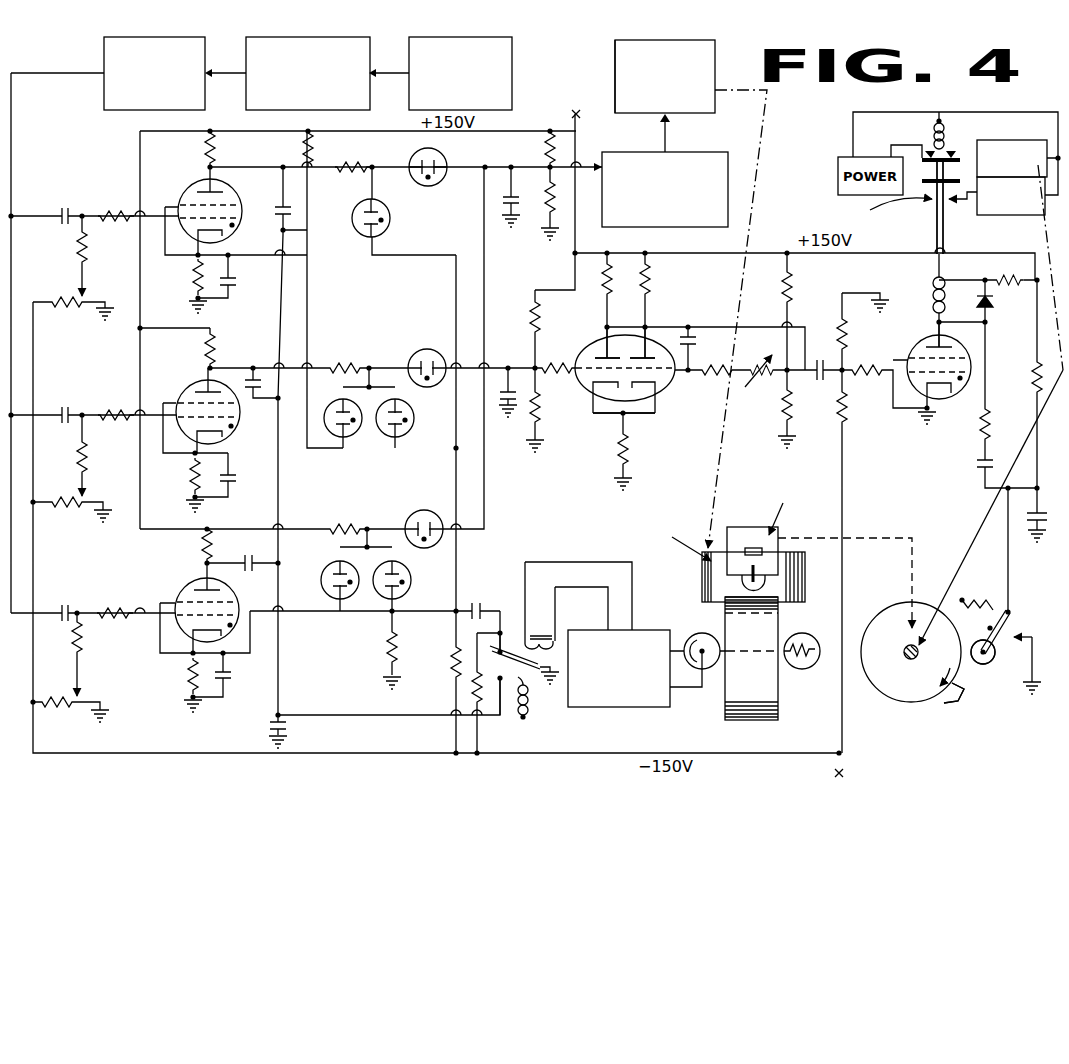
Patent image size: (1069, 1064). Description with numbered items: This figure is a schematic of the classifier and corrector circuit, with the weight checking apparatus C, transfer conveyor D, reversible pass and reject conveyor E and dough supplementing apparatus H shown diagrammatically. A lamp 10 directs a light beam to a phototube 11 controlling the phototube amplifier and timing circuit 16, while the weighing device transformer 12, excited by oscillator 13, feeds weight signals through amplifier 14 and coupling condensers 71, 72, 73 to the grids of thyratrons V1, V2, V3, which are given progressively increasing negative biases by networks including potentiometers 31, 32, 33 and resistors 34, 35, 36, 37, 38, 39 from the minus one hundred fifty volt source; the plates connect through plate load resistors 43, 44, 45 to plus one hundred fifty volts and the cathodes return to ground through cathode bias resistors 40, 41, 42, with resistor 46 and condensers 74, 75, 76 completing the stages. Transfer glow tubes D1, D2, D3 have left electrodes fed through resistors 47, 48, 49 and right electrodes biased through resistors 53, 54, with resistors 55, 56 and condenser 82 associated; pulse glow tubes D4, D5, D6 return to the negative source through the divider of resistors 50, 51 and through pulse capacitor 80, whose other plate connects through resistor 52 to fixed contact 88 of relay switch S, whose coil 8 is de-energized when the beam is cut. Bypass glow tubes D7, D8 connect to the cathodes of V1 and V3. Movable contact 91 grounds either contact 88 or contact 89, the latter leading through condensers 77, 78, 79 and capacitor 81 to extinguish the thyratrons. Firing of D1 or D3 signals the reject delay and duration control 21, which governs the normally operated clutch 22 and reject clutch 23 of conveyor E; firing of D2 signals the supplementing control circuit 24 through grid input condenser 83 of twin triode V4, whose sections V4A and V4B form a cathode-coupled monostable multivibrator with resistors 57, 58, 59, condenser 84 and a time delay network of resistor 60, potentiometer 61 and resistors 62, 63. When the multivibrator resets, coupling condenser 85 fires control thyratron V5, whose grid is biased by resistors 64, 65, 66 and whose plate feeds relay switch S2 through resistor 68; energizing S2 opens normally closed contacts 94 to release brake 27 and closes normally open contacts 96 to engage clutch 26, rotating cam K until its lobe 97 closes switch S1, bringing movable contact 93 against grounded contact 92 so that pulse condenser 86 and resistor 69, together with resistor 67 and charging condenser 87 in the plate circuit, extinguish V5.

The relay 8 is at (520, 696).
The lamp 10 is at (822, 660).
The phototube 11 is at (693, 636).
The weighing device transformer 12 is at (321, 37).
The oscillator 13 is at (473, 37).
The amplifier 14 is at (104, 45).
The phototube amplifier and timing circuit 16 is at (598, 708).
The reject delay and duration control 21 is at (688, 152).
The normally operated clutch 22 is at (615, 60).
The reject clutch 23 is at (615, 83).
The dough discharge control circuit 24 is at (605, 418).
The clutch 26 is at (1005, 215).
The brake 27 is at (1004, 140).
The potentiometer 31 is at (73, 306).
The potentiometer 32 is at (68, 512).
The potentiometer 33 is at (66, 705).
The resistor 34 is at (80, 249).
The resistor 35 is at (80, 450).
The resistor 36 is at (80, 656).
The resistor 37 is at (121, 192).
The resistor 38 is at (108, 422).
The resistor 39 is at (111, 618).
The cathode bias resistor 40 is at (196, 275).
The cathode bias resistor 41 is at (195, 471).
The cathode bias resistor 42 is at (188, 681).
The plate load resistor 43 is at (217, 151).
The plate load resistor 44 is at (221, 353).
The plate load resistor 45 is at (212, 549).
The resistor 46 is at (313, 158).
The resistor 47 is at (360, 164).
The resistor 48 is at (341, 363).
The resistor 49 is at (343, 522).
The resistor 50 is at (385, 640).
The resistor 51 is at (449, 655).
The resistor 52 is at (477, 697).
The resistor 53 is at (545, 150).
The resistor 54 is at (533, 327).
The resistor 55 is at (547, 218).
The resistor 56 is at (537, 407).
The resistor 57 is at (627, 274).
The resistor 58 is at (649, 275).
The resistor 59 is at (632, 453).
The resistor 60 is at (714, 386).
The potentiometer 61 is at (760, 382).
The resistor 62 is at (787, 407).
The resistor 63 is at (793, 283).
The resistor 64 is at (850, 410).
The resistor 65 is at (840, 327).
The grid resistor 66 is at (862, 377).
The resistor 67 is at (1030, 372).
The resistor 68 is at (1025, 287).
The resistor 69 is at (978, 422).
The coupling condenser 71 is at (62, 208).
The coupling condenser 72 is at (72, 412).
The coupling condenser 73 is at (75, 612).
The condenser 74 is at (232, 284).
The condenser 75 is at (233, 476).
The condenser 76 is at (230, 681).
The condenser 77 is at (278, 212).
The condenser 78 is at (250, 393).
The condenser 79 is at (252, 573).
The pulse capacitor 80 is at (474, 603).
The capacitor 81 is at (283, 728).
The condenser 82 is at (534, 192).
The grid input condenser 83 is at (505, 402).
The condenser 84 is at (690, 335).
The coupling condenser 85 is at (820, 382).
The pulse condenser 86 is at (978, 475).
The charging condenser 87 is at (1037, 508).
The fixed contact 88 is at (500, 648).
The fixed contact 89 is at (500, 680).
The movable contact 91 is at (512, 664).
The fixed contact 92 is at (1016, 632).
The movable contact 93 is at (993, 664).
The normally closed contacts 94 is at (927, 150).
The normally open contacts 96 is at (980, 222).
The lobe 97 is at (950, 699).
The thyratron V1 is at (193, 187).
The thyratron V2 is at (197, 388).
The thyratron V3 is at (188, 583).
The twin triode envelope V4 is at (670, 393).
The triode section V4A is at (593, 348).
The triode section V4B is at (658, 343).
The clutch and brake control thyratron V5 is at (910, 338).
The transfer glow tube D1 is at (446, 181).
The transfer glow tube D2 is at (430, 348).
The transfer glow tube D3 is at (428, 511).
The pulse glow tube D4 is at (390, 226).
The pulse glow tube D5 is at (413, 408).
The pulse glow tube D6 is at (407, 572).
The bypass glow tube D7 is at (358, 428).
The bypass glow tube D8 is at (352, 598).
The relay control switch S is at (536, 686).
The normally open switch S1 is at (1052, 578).
The relay switch S2 is at (931, 213).
The weight checking apparatus C is at (719, 670).
The transfer conveyor D is at (783, 608).
The reversible pass and reject conveyor E is at (696, 578).
The dough supplementing apparatus H is at (784, 530).
The cam K is at (902, 698).